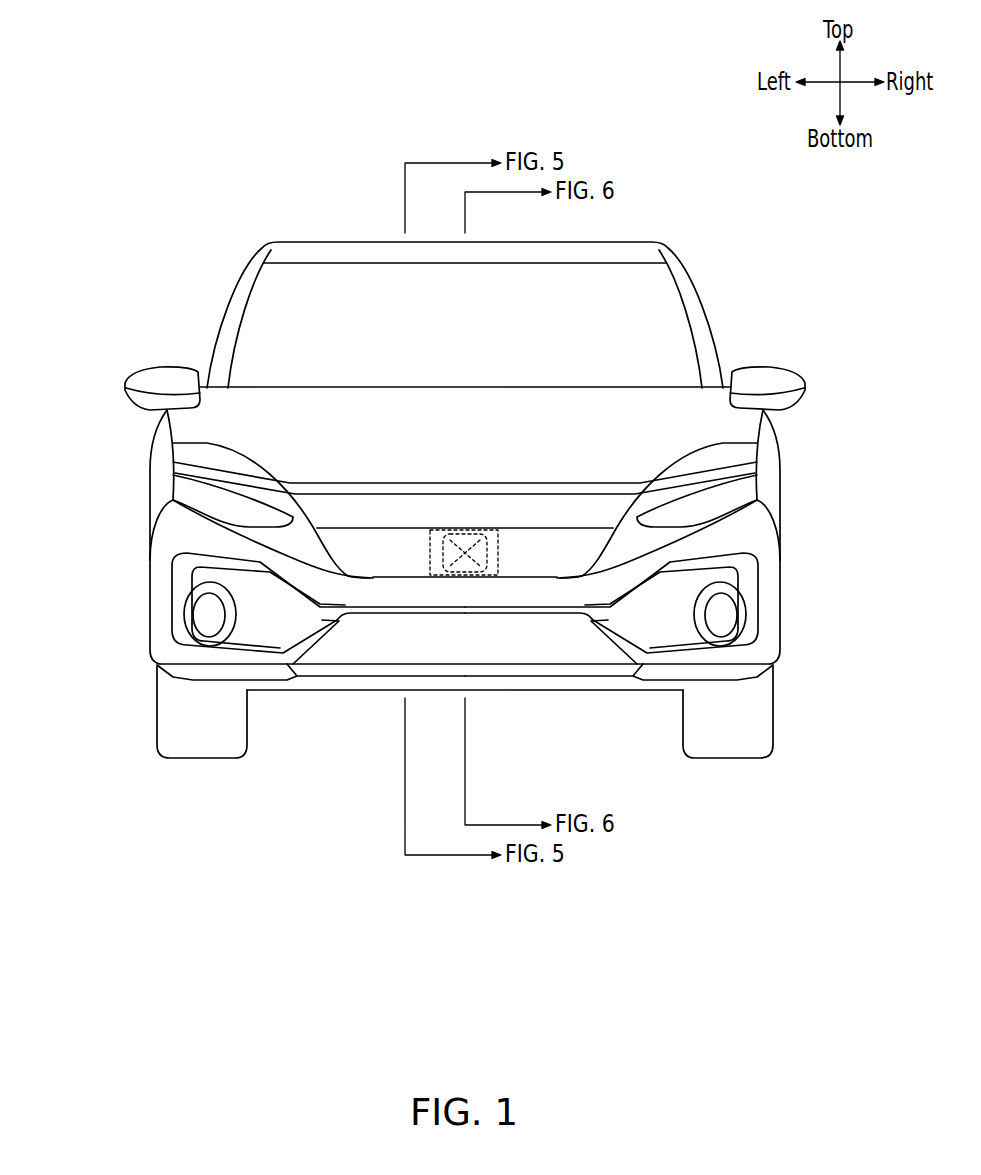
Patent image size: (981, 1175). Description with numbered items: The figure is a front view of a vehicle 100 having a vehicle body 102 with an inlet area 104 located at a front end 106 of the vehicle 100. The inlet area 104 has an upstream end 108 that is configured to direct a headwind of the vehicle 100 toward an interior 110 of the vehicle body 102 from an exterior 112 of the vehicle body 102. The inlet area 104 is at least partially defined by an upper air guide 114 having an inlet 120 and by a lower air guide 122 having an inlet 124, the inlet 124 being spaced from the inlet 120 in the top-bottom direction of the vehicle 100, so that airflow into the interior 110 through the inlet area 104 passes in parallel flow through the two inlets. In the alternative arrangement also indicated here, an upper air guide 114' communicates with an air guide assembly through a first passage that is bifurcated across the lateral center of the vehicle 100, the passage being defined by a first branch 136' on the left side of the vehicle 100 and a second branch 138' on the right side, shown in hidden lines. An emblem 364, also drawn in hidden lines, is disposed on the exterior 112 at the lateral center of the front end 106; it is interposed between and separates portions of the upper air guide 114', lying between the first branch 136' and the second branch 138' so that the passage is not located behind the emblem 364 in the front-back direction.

The vehicle 100 is at (207, 198).
The vehicle body 102 is at (778, 437).
The inlet area 104 is at (259, 620).
The front end 106 is at (758, 535).
The upstream end 108 is at (542, 592).
The interior 110 is at (360, 560).
The exterior 112 is at (575, 417).
The upper air guide 114 is at (571, 440).
The upper air guide 114' is at (333, 676).
The inlet 120 is at (173, 443).
The lower air guide 122 is at (693, 573).
The inlet 124 is at (498, 667).
The first branch 136' is at (361, 673).
The second branch 138' is at (532, 671).
The emblem 364 is at (462, 527).